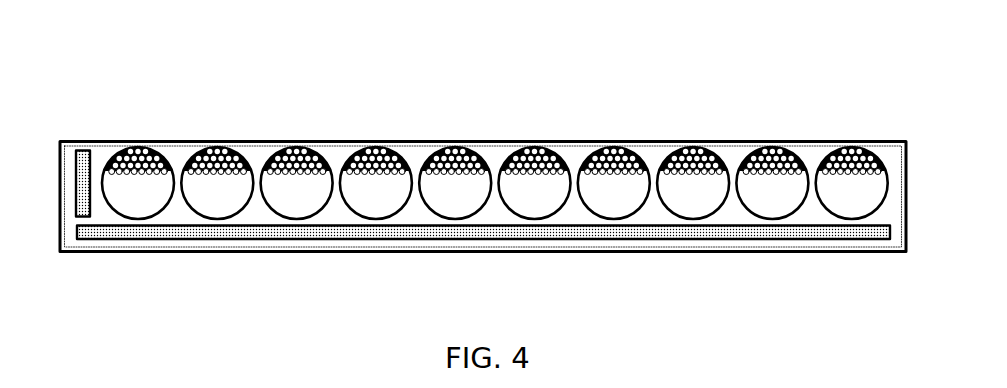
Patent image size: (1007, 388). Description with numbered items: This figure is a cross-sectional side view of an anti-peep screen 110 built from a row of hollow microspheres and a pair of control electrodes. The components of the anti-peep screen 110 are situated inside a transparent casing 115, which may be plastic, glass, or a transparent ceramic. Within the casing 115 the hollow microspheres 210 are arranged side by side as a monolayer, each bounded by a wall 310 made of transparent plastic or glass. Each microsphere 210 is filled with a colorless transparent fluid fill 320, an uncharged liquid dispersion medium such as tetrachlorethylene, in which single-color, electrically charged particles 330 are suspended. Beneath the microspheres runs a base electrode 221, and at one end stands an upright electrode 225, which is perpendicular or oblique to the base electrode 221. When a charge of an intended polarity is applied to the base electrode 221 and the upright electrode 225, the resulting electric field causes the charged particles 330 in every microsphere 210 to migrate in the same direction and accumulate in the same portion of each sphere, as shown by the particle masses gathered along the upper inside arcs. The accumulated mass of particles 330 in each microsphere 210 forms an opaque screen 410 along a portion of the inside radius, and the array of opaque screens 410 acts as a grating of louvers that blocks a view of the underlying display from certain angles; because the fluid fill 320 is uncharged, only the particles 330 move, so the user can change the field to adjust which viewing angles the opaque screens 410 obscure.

The anti-peep screen 110 is at (134, 103).
The transparent casing 115 is at (733, 160).
The hollow microsphere 210 is at (482, 198).
The base electrode 221 is at (400, 232).
The upright electrode 225 is at (82, 205).
The wall 310 is at (231, 146).
The colorless transparent fluid fill 320 is at (613, 192).
The particles 330 is at (532, 148).
The opaque screen 410 is at (403, 148).